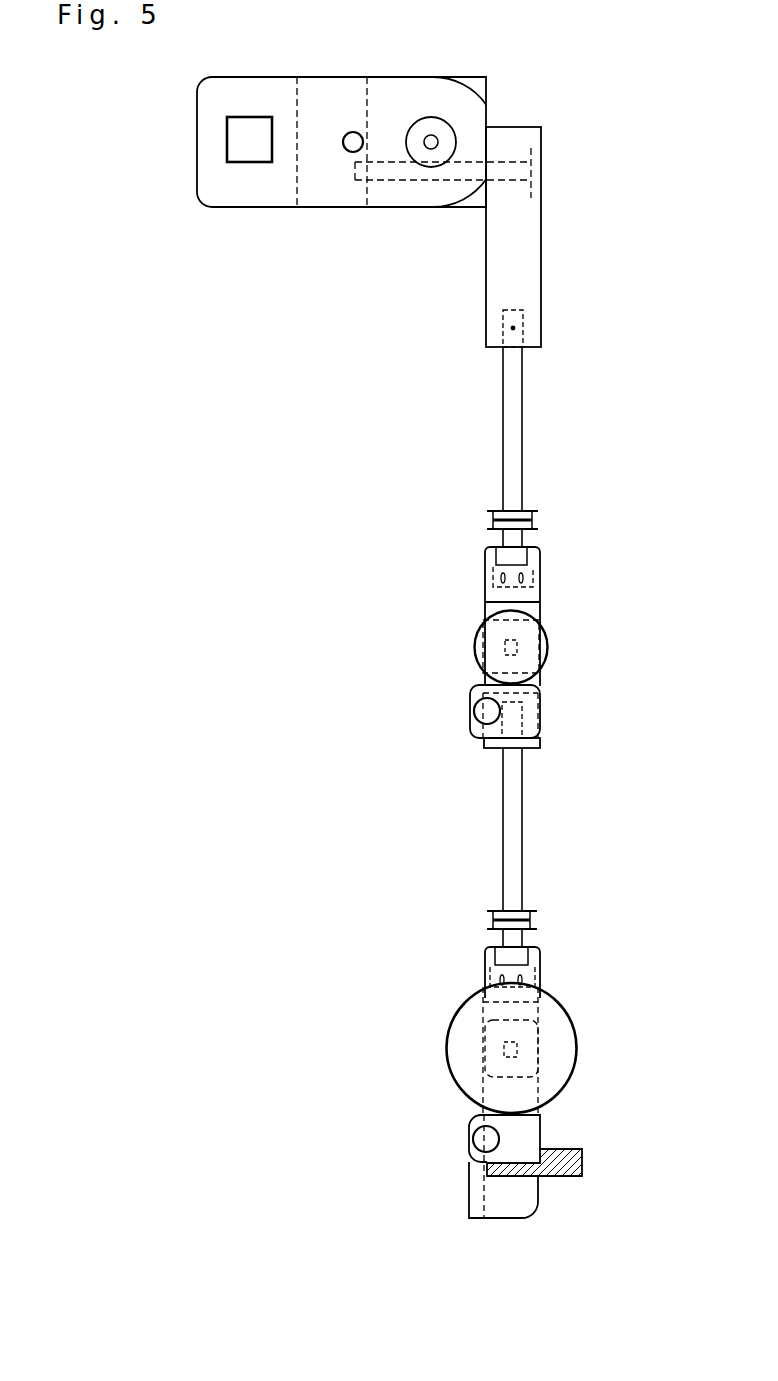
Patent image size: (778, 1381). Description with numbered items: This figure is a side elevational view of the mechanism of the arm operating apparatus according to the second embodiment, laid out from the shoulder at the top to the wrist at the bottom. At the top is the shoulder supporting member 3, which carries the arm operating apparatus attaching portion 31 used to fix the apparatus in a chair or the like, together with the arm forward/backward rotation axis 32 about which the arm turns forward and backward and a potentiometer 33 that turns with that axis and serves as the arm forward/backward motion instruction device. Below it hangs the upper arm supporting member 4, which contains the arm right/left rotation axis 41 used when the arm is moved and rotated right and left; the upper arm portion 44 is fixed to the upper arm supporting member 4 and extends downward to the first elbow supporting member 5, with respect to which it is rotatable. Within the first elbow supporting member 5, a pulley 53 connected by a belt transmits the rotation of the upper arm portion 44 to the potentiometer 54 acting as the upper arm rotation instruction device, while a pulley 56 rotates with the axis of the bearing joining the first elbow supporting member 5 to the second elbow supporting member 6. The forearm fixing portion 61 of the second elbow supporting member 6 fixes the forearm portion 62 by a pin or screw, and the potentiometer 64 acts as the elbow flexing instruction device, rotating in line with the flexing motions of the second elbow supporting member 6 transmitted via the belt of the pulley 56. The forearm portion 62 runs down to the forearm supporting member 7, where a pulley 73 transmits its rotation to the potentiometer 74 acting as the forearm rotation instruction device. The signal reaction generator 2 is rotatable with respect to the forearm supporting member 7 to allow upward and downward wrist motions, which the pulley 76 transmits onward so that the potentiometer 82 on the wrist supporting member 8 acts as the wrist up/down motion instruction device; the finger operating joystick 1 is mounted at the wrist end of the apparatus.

The finger operating joystick 1 is at (570, 1176).
The signal reaction generator 2 is at (520, 1220).
The shoulder supporting member 3 is at (323, 183).
The arm operating apparatus attaching portion 31 is at (253, 147).
The arm forward/backward rotation axis 32 is at (437, 140).
The potentiometer 33 is at (412, 123).
The upper arm supporting member 4 is at (533, 333).
The arm right/left rotation axis 41 is at (520, 170).
The upper arm portion 44 is at (513, 483).
The first elbow supporting member 5 is at (528, 604).
The pulley 53 is at (533, 520).
The potentiometer 54 is at (525, 555).
The pulley 56 is at (543, 647).
The second elbow supporting member 6 is at (542, 720).
The forearm fixing portion 61 is at (512, 725).
The forearm portion 62 is at (512, 857).
The potentiometer 64 is at (473, 710).
The forearm supporting member 7 is at (533, 973).
The pulley 73 is at (493, 919).
The potentiometer 74 is at (497, 958).
The pulley 76 is at (548, 1052).
The wrist supporting member 8 is at (473, 1197).
The potentiometer 82 is at (473, 1138).